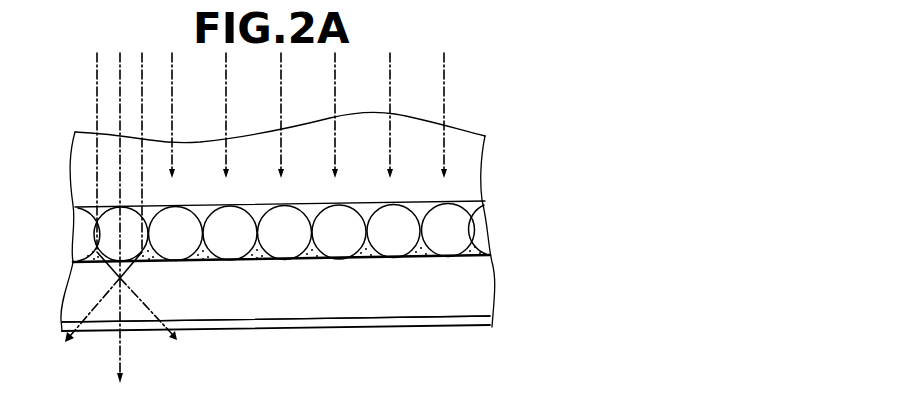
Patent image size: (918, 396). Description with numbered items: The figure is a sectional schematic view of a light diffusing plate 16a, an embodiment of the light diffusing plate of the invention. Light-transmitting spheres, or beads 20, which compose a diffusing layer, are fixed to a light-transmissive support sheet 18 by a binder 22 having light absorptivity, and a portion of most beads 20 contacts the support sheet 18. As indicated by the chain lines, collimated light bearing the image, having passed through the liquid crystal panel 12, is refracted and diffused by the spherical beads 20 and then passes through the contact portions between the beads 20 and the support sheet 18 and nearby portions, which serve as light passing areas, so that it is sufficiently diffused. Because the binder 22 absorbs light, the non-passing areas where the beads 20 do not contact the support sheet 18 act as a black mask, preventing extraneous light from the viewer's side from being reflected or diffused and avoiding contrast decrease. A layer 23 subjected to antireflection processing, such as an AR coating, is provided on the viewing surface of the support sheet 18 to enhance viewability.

The light diffusing plate 16a is at (516, 113).
The liquid crystal panel 12 is at (467, 176).
The light-transmitting spheres (beads) 20 is at (453, 230).
The binder 22 is at (364, 254).
The support sheet 18 is at (475, 290).
The antireflection layer 23 is at (453, 323).